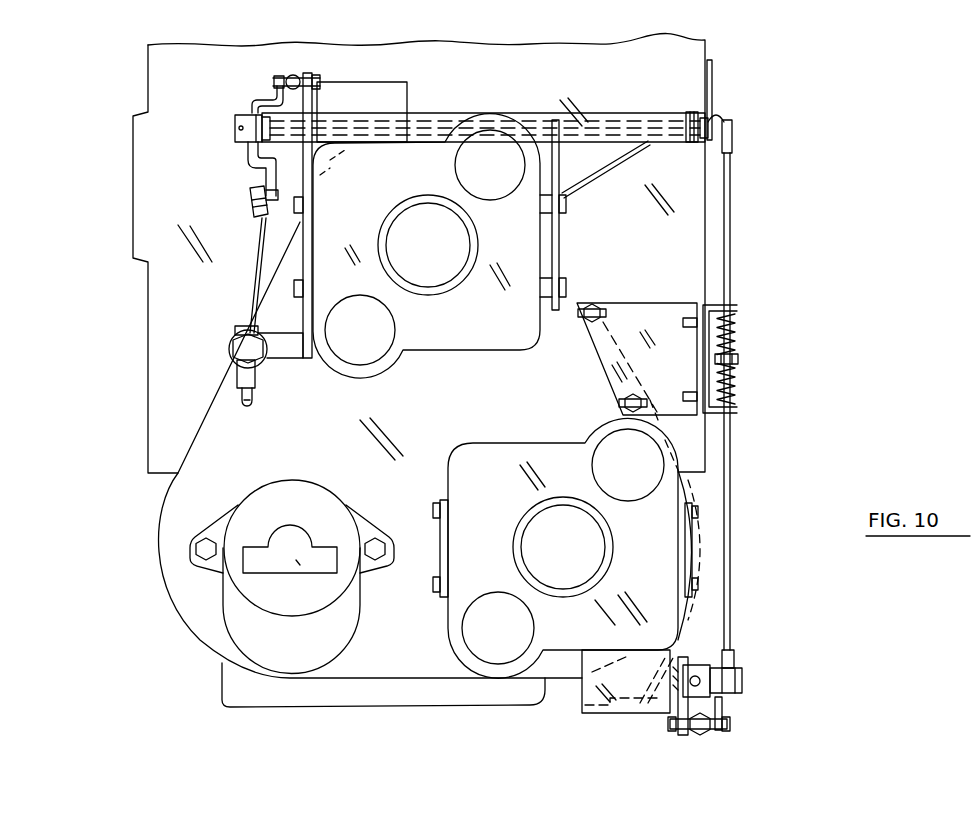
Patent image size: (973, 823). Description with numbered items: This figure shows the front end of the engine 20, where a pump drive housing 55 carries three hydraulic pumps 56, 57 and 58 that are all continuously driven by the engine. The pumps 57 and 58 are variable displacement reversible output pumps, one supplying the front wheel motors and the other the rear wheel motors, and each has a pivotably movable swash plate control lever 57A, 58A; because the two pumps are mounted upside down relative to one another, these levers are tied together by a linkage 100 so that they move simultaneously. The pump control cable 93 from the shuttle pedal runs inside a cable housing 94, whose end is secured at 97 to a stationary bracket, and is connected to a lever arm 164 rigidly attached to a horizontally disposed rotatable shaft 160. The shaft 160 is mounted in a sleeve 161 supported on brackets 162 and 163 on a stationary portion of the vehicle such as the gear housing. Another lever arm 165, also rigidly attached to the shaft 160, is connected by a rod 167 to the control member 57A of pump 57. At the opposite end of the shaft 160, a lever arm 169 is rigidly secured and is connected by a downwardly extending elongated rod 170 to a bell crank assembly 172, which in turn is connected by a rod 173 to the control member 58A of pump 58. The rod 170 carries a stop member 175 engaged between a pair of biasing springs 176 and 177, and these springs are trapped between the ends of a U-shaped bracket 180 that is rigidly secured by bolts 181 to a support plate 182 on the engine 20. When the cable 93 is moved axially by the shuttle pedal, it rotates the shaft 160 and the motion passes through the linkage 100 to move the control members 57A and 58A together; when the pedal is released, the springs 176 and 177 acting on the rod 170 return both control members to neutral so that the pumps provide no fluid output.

The engine 20 is at (148, 456).
The pump drive housing 55 is at (160, 563).
The hydraulic pump 56 is at (235, 625).
The hydraulic pump 57 is at (474, 350).
The swash plate control lever 57A is at (321, 101).
The hydraulic pump 58 is at (488, 450).
The swash plate control lever 58A is at (678, 713).
The pump control cable 93 is at (257, 248).
The cable housing 94 is at (242, 397).
The cable housing securing point 97 is at (233, 351).
The linkage 100 is at (240, 103).
The rotatable shaft 160 is at (685, 118).
The sleeve 161 is at (692, 143).
The bracket 162 is at (303, 358).
The bracket 163 is at (558, 239).
The lever arm 164 is at (248, 158).
The lever arm 165 is at (258, 96).
The rod 167 is at (295, 76).
The lever arm 169 is at (708, 104).
The elongated rod 170 is at (730, 193).
The bell crank assembly 172 is at (718, 710).
The rod 173 is at (697, 732).
The stop member 175 is at (738, 360).
The biasing spring 176 is at (737, 342).
The biasing spring 177 is at (737, 380).
The U-shaped bracket 180 is at (737, 413).
The bolts 181 is at (685, 393).
The support plate 182 is at (633, 303).